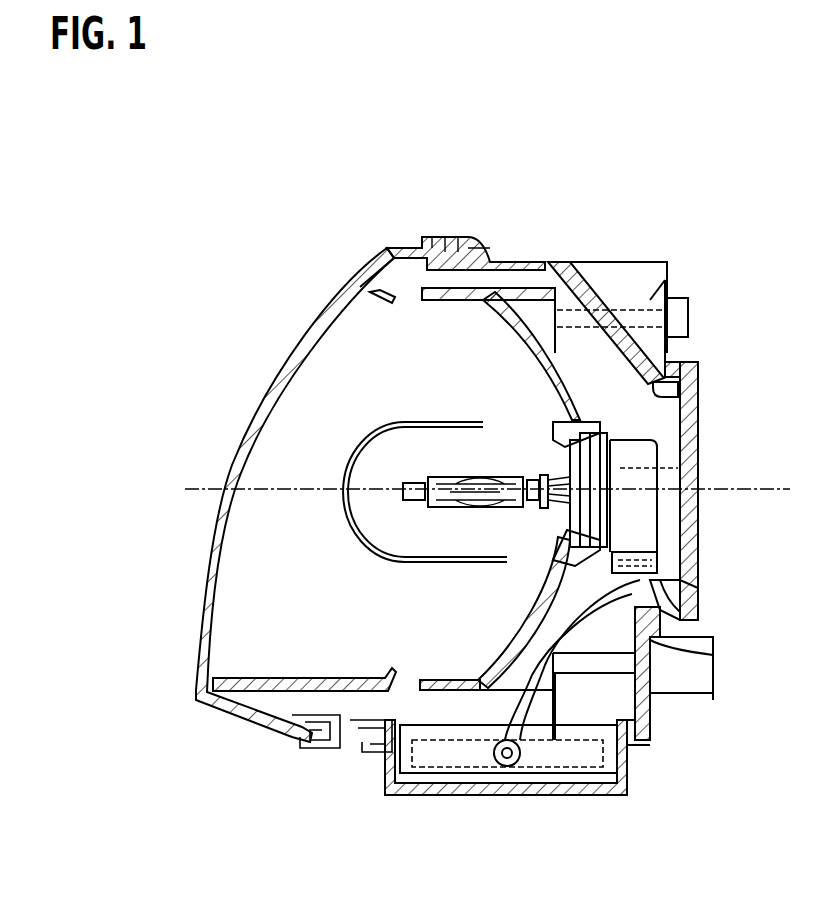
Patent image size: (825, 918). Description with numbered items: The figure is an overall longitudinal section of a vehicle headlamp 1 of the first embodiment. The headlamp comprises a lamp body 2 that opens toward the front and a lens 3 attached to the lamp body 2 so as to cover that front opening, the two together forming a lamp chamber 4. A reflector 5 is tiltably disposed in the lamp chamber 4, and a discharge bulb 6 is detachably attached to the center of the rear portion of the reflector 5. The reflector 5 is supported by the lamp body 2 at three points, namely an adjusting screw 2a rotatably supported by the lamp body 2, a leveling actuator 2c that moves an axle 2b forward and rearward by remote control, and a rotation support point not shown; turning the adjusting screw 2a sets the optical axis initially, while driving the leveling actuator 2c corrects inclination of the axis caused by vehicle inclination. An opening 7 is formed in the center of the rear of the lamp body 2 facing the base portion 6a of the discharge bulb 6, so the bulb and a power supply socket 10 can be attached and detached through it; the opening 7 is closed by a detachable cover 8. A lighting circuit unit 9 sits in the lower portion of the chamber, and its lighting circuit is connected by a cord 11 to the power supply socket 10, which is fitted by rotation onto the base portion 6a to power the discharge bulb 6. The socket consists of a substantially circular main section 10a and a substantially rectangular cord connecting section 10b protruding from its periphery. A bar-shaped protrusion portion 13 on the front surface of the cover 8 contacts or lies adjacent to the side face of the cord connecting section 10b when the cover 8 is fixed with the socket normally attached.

The vehicle headlamp 1 is at (327, 173).
The lamp body 2 is at (537, 260).
The adjusting screw 2a is at (597, 348).
The axle 2b is at (573, 667).
The leveling actuator 2c is at (690, 683).
The lens 3 is at (287, 362).
The lamp chamber 4 is at (666, 290).
The reflector 5 is at (453, 700).
The discharge bulb 6 is at (458, 478).
The base portion 6a is at (583, 468).
The opening 7 is at (700, 385).
The cover 8 is at (700, 516).
The lighting circuit unit 9 is at (618, 700).
The power supply socket 10 is at (655, 473).
The main section 10a is at (630, 440).
The cord connecting section 10b is at (713, 655).
The cord 11 is at (523, 647).
The protrusion portion 13 is at (698, 588).